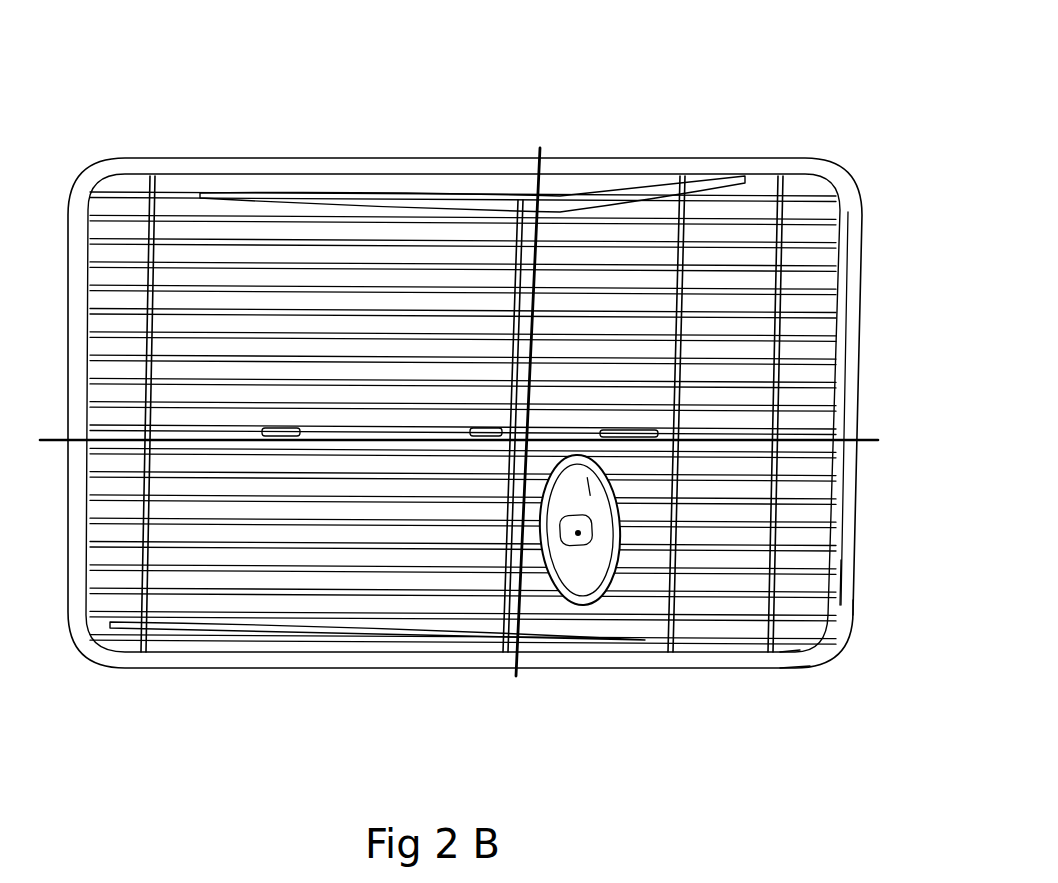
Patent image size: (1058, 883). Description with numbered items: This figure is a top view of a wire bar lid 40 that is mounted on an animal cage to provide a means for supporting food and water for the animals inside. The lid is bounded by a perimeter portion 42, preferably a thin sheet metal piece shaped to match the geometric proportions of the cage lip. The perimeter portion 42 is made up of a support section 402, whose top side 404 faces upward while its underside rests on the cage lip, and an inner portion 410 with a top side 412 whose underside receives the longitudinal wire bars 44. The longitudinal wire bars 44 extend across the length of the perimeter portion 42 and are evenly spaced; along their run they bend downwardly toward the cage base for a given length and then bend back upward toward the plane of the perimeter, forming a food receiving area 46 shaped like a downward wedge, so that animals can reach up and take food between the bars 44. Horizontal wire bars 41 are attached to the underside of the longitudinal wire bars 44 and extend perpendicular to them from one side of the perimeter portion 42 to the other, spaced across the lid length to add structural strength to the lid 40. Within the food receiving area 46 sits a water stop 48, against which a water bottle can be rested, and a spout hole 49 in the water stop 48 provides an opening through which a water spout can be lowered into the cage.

The wire bar lid 40 is at (611, 58).
The horizontal wire bars 41 is at (688, 236).
The perimeter portion 42 is at (848, 208).
The longitudinal wire bars 44 is at (252, 595).
The food receiving area 46 is at (525, 395).
The water stop 48 is at (608, 600).
The spout hole 49 is at (578, 536).
The support section 402 is at (840, 600).
The top side 404 is at (790, 657).
The inner portion 410 is at (830, 630).
The top side 412 is at (792, 663).